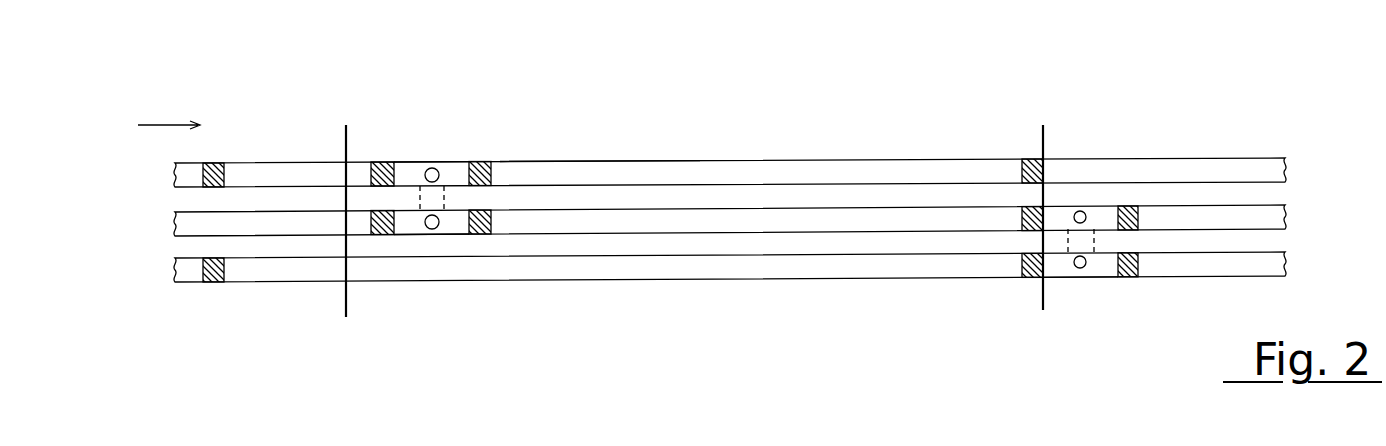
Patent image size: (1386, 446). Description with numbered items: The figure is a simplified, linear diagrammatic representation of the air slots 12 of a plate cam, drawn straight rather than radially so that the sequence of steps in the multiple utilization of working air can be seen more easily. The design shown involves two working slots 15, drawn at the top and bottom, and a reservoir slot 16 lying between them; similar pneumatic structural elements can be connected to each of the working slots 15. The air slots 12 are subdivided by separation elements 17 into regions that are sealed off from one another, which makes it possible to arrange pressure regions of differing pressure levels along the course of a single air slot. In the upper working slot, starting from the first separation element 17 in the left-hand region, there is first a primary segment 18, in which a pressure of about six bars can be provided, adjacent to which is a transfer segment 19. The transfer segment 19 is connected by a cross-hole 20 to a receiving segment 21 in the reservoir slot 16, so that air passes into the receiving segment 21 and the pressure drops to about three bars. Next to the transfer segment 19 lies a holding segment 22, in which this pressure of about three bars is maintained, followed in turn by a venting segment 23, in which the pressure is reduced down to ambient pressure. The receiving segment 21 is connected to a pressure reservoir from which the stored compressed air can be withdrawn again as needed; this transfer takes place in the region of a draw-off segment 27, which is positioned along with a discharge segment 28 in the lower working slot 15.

The air slots 12 is at (688, 157).
The working slots 15 is at (175, 180).
The reservoir slot 16 is at (175, 225).
The separation elements 17 is at (382, 162).
The primary segment 18 is at (280, 162).
The transfer segment 19 is at (455, 167).
The cross-hole 20 is at (427, 200).
The receiving segment 21 is at (456, 222).
The holding segment 22 is at (615, 167).
The venting segment 23 is at (1083, 165).
The draw-off segment 27 is at (1102, 215).
The discharge segment 28 is at (1103, 267).